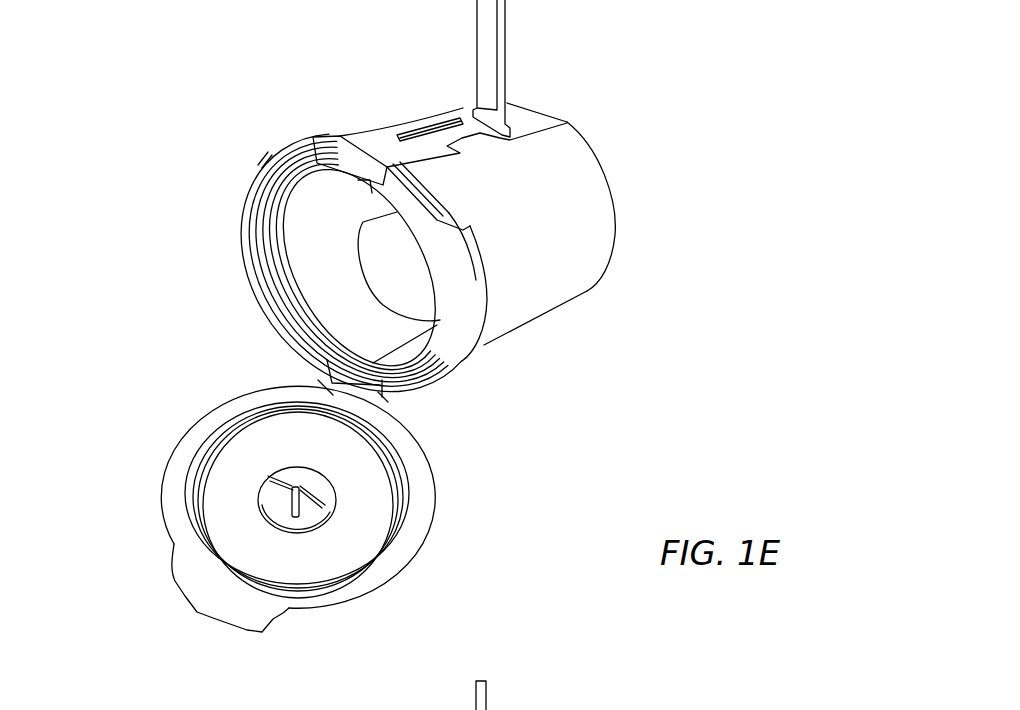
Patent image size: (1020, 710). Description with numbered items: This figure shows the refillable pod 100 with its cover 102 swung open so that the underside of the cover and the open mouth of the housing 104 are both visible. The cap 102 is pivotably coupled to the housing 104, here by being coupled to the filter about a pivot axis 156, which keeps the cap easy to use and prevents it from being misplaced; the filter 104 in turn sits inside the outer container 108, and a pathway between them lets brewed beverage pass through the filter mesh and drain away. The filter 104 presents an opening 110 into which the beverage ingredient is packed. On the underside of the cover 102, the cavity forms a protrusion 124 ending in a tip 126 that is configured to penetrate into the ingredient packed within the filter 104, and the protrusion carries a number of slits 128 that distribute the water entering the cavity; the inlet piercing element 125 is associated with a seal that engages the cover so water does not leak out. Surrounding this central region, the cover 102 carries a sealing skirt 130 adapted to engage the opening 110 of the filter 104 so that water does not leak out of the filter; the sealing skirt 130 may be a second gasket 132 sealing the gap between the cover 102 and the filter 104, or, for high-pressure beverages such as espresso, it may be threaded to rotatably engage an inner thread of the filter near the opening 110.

The filter assembly 100 is at (620, 96).
The cover 102 is at (152, 588).
The filter 104 is at (633, 172).
The container 108 is at (549, 356).
The opening 110 is at (300, 258).
The protrusion 124 is at (325, 488).
The inlet piercing element 125 is at (315, 533).
The tip 126 is at (273, 470).
The slits 128 is at (270, 500).
The sealing skirt 130 is at (242, 424).
The second gasket 132 is at (308, 593).
The pivot axis 156 is at (312, 374).